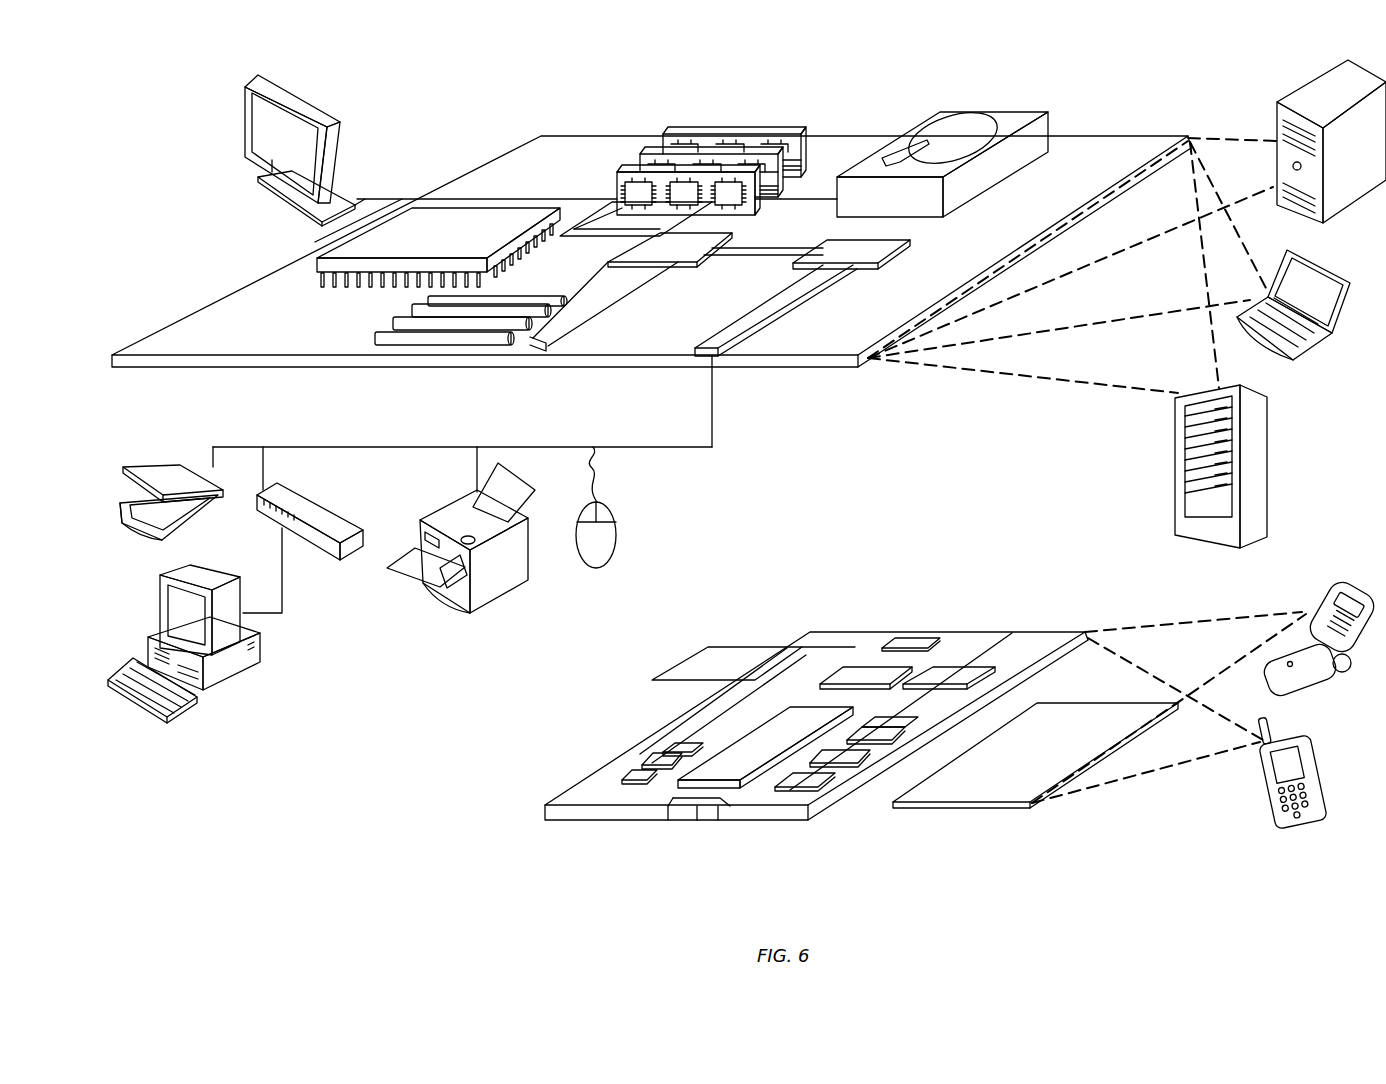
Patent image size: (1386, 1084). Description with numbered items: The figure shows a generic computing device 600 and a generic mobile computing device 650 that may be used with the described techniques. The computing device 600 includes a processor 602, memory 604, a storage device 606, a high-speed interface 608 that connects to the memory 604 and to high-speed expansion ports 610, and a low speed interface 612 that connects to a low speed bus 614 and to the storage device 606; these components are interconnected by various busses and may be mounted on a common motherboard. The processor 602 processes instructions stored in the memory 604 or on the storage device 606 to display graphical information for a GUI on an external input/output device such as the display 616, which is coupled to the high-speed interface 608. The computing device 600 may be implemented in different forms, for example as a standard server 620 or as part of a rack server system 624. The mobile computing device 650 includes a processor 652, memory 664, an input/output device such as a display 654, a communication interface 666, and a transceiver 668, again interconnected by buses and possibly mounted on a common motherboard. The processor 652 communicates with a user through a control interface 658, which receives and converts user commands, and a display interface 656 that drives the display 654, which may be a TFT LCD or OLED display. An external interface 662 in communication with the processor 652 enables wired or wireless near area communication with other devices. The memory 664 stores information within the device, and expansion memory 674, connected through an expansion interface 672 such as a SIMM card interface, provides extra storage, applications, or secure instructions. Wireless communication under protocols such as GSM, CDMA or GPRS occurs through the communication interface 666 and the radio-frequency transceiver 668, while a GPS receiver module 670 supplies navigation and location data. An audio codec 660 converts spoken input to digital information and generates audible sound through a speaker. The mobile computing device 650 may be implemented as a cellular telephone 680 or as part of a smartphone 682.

The computing device 600 is at (456, 100).
The processor 602 is at (330, 263).
The memory 604 is at (688, 127).
The storage device 606 is at (938, 112).
The high-speed interface 608 is at (650, 247).
The high-speed expansion ports 610 is at (400, 323).
The low speed interface 612 is at (833, 250).
The low speed bus 614 is at (722, 353).
The display 616 is at (248, 77).
The standard server 620 is at (1277, 122).
The rack server system 624 is at (1175, 493).
The mobile computing device 650 is at (516, 821).
The processor 652 is at (737, 773).
The display 654 is at (994, 793).
The display interface 656 is at (812, 792).
The control interface 658 is at (846, 768).
The audio codec 660 is at (876, 742).
The external interface 662 is at (698, 808).
The memory 664 is at (643, 763).
The communication interface 666 is at (866, 672).
The transceiver 668 is at (950, 672).
The GPS receiver module 670 is at (920, 636).
The expansion interface 672 is at (788, 648).
The expansion memory 674 is at (712, 648).
The cellular telephone 680 is at (1333, 588).
The smartphone 682 is at (1263, 775).